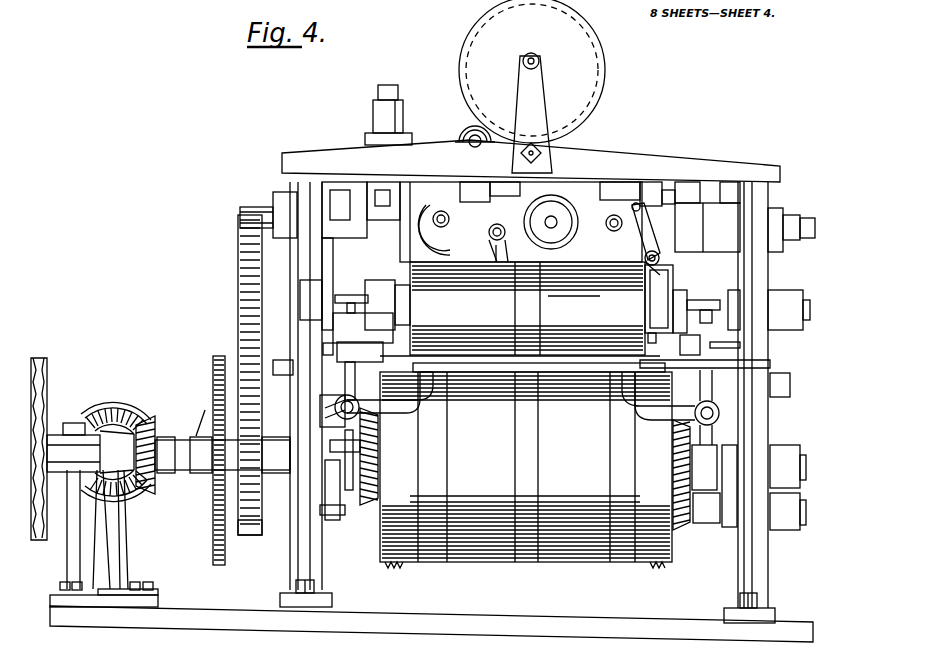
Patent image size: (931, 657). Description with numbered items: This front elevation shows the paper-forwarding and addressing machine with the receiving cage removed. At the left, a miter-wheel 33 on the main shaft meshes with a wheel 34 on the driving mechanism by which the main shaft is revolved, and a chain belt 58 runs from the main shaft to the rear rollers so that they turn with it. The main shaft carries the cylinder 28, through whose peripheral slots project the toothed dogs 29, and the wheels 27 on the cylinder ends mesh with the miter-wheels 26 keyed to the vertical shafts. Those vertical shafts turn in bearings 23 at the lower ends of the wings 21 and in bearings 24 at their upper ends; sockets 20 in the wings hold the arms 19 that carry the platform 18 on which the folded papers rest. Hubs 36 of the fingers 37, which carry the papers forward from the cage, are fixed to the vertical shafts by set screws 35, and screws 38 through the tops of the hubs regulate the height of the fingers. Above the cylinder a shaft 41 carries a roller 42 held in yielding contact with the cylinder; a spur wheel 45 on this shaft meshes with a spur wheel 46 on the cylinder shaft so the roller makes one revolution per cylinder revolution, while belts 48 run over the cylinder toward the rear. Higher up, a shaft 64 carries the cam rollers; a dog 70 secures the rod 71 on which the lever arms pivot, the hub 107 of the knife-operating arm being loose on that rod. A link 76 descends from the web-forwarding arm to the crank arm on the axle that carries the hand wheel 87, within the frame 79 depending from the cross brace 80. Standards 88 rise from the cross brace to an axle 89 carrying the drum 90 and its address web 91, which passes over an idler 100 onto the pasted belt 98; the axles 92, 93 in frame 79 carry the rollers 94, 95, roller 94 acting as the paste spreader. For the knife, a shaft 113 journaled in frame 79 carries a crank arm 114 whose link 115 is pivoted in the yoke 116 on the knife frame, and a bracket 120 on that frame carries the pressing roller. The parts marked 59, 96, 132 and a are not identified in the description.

The platform 18 is at (486, 374).
The arms 19 is at (408, 412).
The sockets 20 is at (360, 403).
The wings 21 is at (352, 455).
The bearing 23 is at (335, 505).
The bearings 24 is at (410, 356).
The miter-wheels 26 is at (328, 422).
The wheels 27 is at (376, 480).
The cylinder 28 is at (526, 467).
The toothed dogs 29 is at (392, 564).
The miter-wheel 33 is at (155, 418).
The wheel 34 is at (108, 410).
The set screws 35 is at (786, 372).
The hubs 36 is at (745, 346).
The fingers 37 is at (680, 408).
The screws 38 is at (700, 303).
The shaft 41 is at (183, 446).
The roller 42 is at (574, 301).
The spur wheel 45 is at (246, 272).
The spur wheel 46 is at (246, 536).
The belts 48 is at (516, 470).
The chain belt 58 is at (212, 515).
The cylinder 59 is at (524, 303).
The shaft 64 is at (266, 206).
The dog 70 is at (356, 186).
The rod 71 is at (392, 186).
The link 76 is at (551, 222).
The frame 79 is at (484, 243).
The cross brace 80 is at (551, 155).
The hand wheel 87 is at (550, 230).
The standards 88 is at (532, 114).
The axle 89 is at (540, 62).
The drum 90 is at (532, 71).
The web 91 is at (468, 126).
The axle 92 is at (504, 221).
The axle 93 is at (449, 219).
The roller 94 is at (500, 248).
The roller 95 is at (412, 226).
The plate 96 is at (521, 222).
The belt 98 is at (404, 268).
The idler 100 is at (458, 138).
The hub 107 is at (650, 184).
The shaft 113 is at (612, 229).
The crank arm 114 is at (642, 210).
The link 115 is at (644, 254).
The yoke 116 is at (578, 298).
The bracket 120 is at (645, 296).
The post 132 is at (385, 110).
The shaft portion a is at (201, 413).